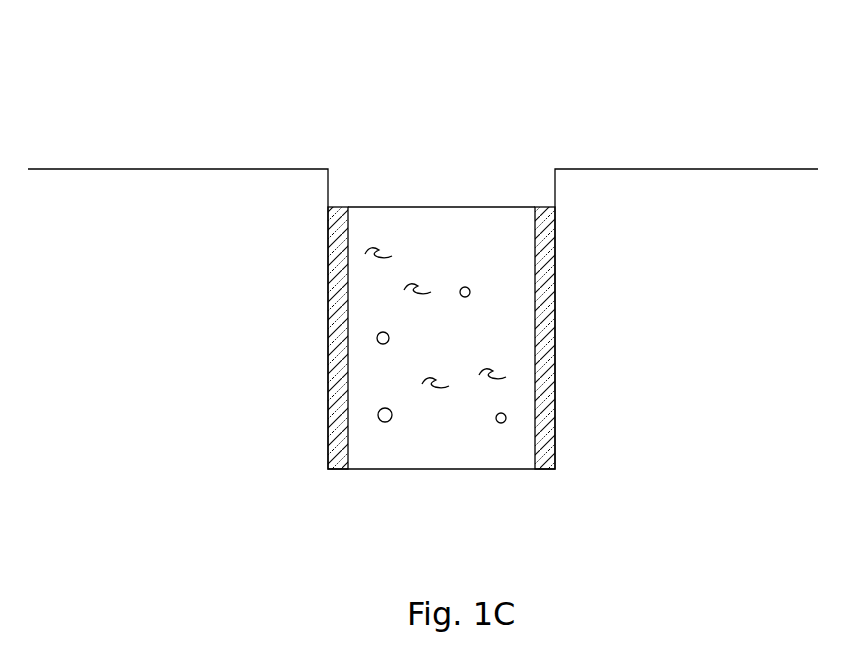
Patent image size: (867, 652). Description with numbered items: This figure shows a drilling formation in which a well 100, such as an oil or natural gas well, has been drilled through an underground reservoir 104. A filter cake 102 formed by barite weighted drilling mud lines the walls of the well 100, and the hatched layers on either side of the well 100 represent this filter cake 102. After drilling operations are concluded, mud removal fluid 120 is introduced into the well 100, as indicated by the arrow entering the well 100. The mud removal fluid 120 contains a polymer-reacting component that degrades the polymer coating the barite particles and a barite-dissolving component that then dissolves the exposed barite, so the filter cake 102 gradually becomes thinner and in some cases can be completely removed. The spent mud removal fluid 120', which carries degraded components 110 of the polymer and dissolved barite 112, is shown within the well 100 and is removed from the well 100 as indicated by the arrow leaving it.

The well 100 is at (172, 70).
The filter cake 102 is at (330, 400).
The underground reservoir 104 is at (707, 350).
The degraded components of the polymer 110 is at (391, 419).
The dissolved barite 112 is at (465, 287).
The mud removal fluid 120 is at (333, 95).
The mud removal fluid 120' is at (486, 225).